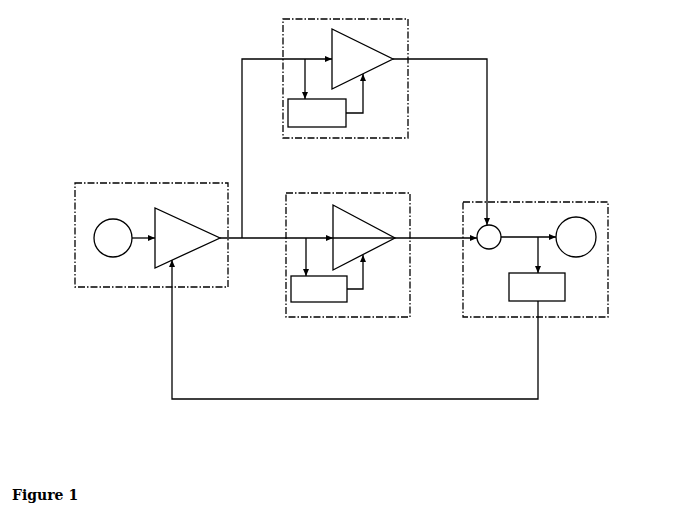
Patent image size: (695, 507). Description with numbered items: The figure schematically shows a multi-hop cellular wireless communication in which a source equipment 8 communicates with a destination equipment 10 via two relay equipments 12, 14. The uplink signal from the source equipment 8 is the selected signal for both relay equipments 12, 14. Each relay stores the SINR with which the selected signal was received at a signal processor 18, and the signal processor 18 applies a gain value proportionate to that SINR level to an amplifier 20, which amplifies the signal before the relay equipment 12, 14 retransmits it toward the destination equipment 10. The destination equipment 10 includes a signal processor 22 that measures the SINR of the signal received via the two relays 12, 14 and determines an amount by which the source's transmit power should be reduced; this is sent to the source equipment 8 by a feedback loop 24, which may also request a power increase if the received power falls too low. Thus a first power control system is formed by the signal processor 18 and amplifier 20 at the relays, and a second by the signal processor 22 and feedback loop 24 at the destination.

The source equipment 8 is at (75, 287).
The destination equipment 10 is at (567, 317).
The relay equipment 12 is at (350, 317).
The relay equipment 14 is at (337, 138).
The signal processor 18 is at (288, 113).
The amplifier 20 is at (362, 43).
The signal processor 22 is at (565, 287).
The feedback loop 24 is at (312, 399).